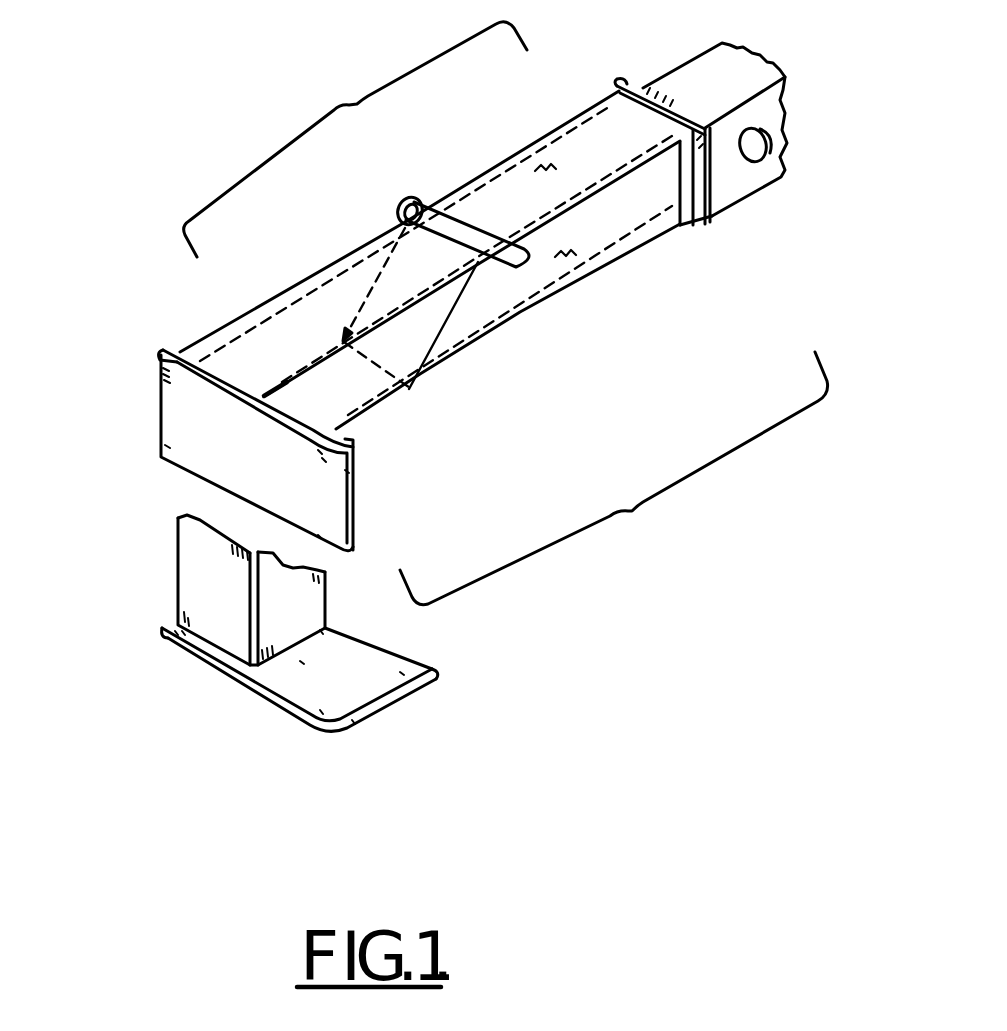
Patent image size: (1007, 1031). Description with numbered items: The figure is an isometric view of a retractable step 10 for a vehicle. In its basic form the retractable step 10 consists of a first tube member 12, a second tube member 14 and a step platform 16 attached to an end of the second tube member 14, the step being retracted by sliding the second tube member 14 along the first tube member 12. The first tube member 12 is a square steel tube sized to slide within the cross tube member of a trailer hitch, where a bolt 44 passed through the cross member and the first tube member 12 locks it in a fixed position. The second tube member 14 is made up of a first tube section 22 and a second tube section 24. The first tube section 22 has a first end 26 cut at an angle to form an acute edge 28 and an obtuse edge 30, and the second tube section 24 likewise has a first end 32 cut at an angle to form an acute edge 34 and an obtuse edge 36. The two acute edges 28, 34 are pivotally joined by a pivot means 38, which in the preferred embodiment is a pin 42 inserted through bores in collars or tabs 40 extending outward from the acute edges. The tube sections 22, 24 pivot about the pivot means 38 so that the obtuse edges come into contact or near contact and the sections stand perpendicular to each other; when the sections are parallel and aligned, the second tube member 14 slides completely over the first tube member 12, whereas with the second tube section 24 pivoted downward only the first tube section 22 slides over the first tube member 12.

The retractable step 10 is at (614, 484).
The first tube member 12 is at (426, 257).
The second tube member 14 is at (355, 139).
The step platform 16 is at (310, 495).
The first tube section 22 is at (606, 230).
The second tube section 24 is at (333, 388).
The first end 26 is at (490, 268).
The acute edge 28 is at (496, 270).
The obtuse edge 30 is at (548, 303).
The first end 32 is at (478, 262).
The acute edge 34 is at (479, 263).
The obtuse edge 36 is at (410, 390).
The pivot means 38 is at (426, 257).
The collars or tabs 40 is at (340, 227).
The pin 42 is at (443, 223).
The bolt 44 is at (768, 130).